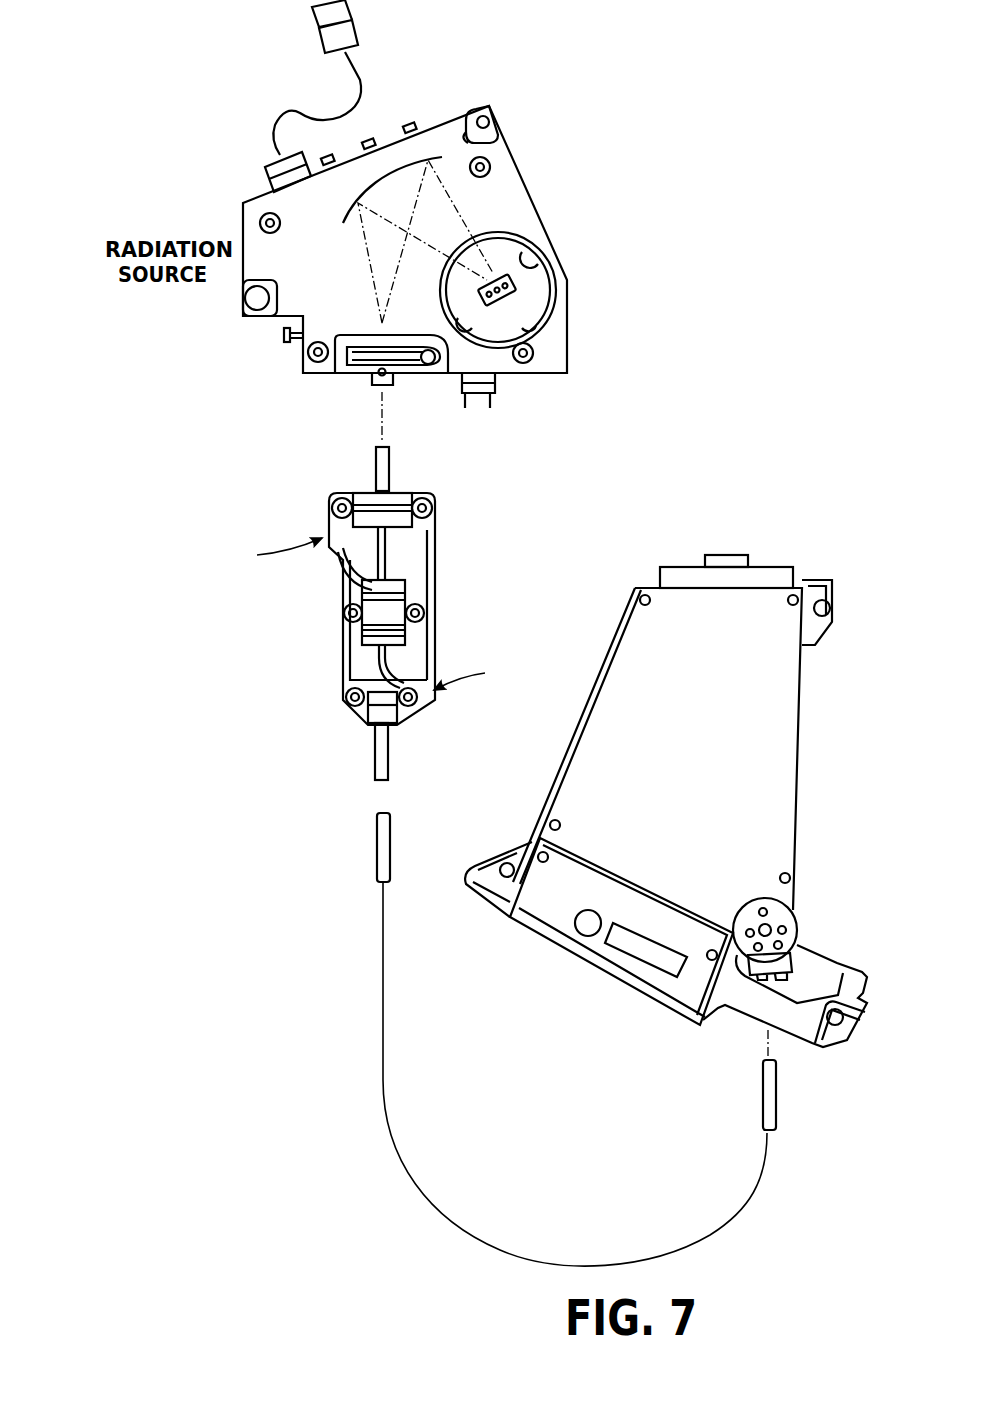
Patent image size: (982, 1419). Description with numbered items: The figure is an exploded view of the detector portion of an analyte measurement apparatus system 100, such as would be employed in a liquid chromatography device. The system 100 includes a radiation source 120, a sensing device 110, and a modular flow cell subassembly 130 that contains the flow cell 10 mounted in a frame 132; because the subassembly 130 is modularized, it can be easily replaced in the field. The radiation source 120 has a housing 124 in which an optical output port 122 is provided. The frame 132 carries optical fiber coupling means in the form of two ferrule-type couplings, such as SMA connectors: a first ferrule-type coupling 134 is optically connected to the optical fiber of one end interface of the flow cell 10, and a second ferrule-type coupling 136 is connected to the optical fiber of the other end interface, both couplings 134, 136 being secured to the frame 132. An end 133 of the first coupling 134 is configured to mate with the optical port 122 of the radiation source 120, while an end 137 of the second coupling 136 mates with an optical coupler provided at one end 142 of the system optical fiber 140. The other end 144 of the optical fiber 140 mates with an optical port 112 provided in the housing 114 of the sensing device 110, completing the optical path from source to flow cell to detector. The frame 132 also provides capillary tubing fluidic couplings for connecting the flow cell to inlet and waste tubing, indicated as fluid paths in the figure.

The analyte measurement apparatus system 100 is at (830, 370).
The sensing device 110 is at (672, 826).
The optical port 112 is at (790, 1053).
The housing 114 is at (797, 893).
The radiation source 120 is at (588, 160).
The optical output port 122 is at (406, 396).
The housing 124 is at (491, 107).
The flow cell subassembly 130 is at (367, 619).
The frame 132 is at (342, 652).
The end of the first coupling 133 is at (389, 468).
The ferrule-type coupling 134 is at (330, 481).
The second ferrule-type coupling 136 is at (405, 728).
The end of the second coupling 137 is at (390, 770).
The flow cell 10 is at (413, 590).
The optical fiber 140 is at (556, 1039).
The end of the system optical fiber 142 is at (377, 845).
The other end of the system optical fiber 144 is at (778, 1107).